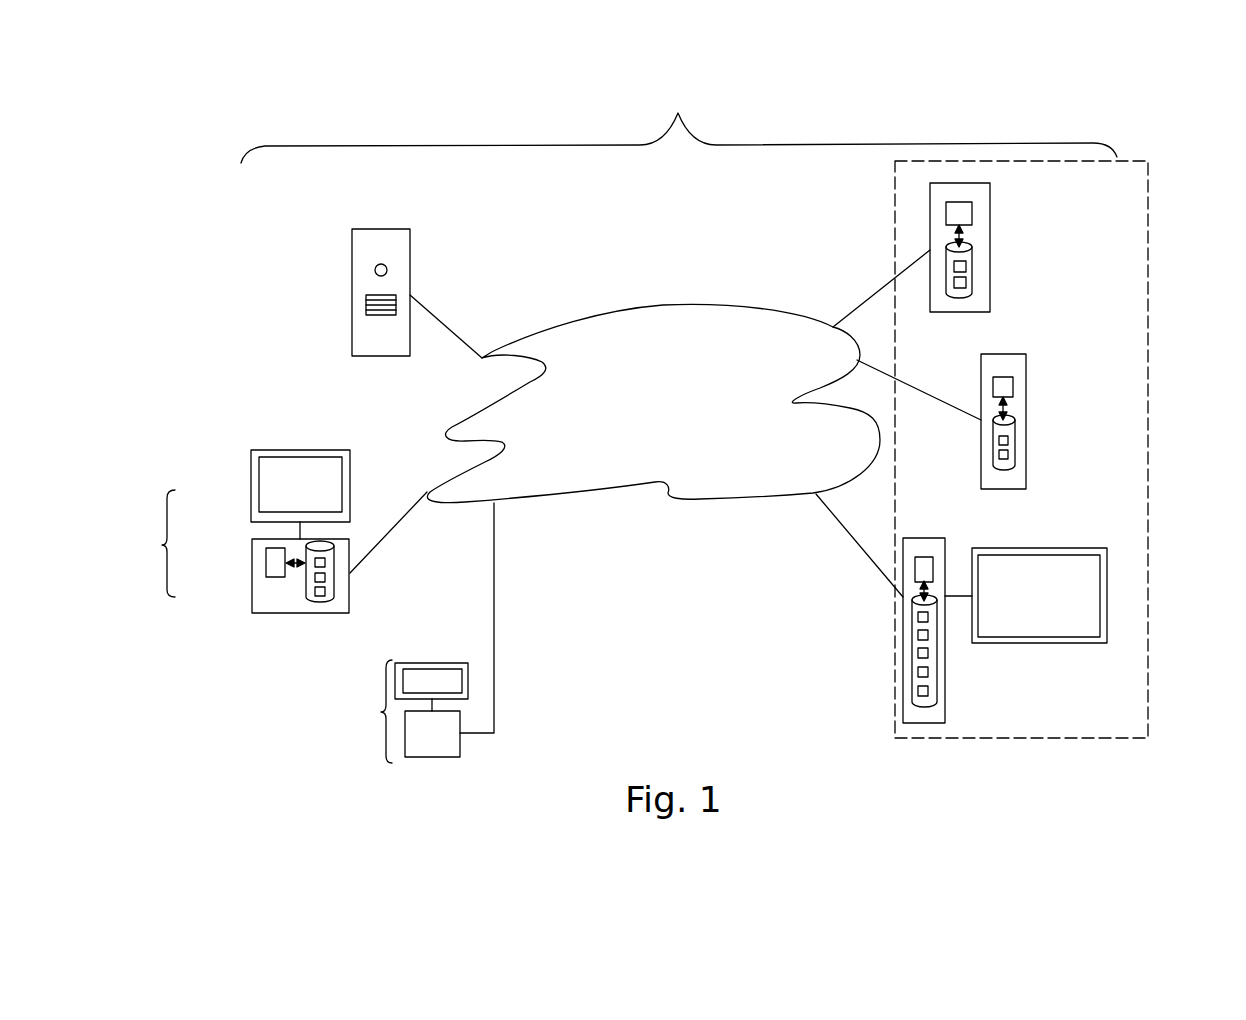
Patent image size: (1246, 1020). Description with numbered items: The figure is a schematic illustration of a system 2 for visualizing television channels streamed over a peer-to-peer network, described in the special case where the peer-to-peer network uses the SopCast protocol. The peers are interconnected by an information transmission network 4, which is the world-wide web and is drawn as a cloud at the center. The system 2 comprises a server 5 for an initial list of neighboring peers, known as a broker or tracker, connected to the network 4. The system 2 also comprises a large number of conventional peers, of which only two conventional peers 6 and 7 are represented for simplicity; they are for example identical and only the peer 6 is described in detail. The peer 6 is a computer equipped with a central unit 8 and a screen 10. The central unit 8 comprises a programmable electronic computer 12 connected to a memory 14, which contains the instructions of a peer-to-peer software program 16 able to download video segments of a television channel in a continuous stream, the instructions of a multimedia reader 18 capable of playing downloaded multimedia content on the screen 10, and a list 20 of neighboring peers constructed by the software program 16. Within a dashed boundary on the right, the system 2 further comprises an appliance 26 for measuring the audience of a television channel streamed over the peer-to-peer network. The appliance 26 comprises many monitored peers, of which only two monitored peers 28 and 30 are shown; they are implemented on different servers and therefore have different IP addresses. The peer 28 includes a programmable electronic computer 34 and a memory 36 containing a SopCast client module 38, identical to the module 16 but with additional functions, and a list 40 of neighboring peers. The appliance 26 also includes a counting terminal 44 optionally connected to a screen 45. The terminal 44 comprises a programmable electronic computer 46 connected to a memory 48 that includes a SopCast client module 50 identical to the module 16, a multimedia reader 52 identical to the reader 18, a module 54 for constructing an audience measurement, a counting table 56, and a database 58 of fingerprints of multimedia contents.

The system 2 is at (679, 125).
The information transmission network 4 is at (653, 403).
The server 5 is at (345, 267).
The conventional peer 6 is at (269, 557).
The conventional peer 7 is at (416, 711).
The central unit 8 is at (244, 574).
The screen 10 is at (243, 487).
The programmable electronic computer 12 is at (267, 575).
The memory 14 is at (304, 600).
The peer-to-peer software program 16 is at (326, 560).
The multimedia reader 18 is at (326, 576).
The list of neighboring peers 20 is at (326, 591).
The appliance 26 is at (1155, 205).
The monitored peer 28 is at (997, 214).
The monitored peer 30 is at (1034, 392).
The programmable electronic computer 34 is at (972, 208).
The memory 36 is at (979, 245).
The SopCast client module 38 is at (966, 266).
The list of neighboring peers 40 is at (966, 283).
The counting terminal 44 is at (913, 528).
The screen 45 is at (1026, 595).
The programmable electronic computer 46 is at (933, 565).
The memory 48 is at (904, 601).
The SopCast client module 50 is at (928, 617).
The multimedia reader 52 is at (928, 635).
The module for constructing an audience measurement 54 is at (928, 653).
The counting table 56 is at (918, 672).
The database of fingerprints 58 is at (918, 690).